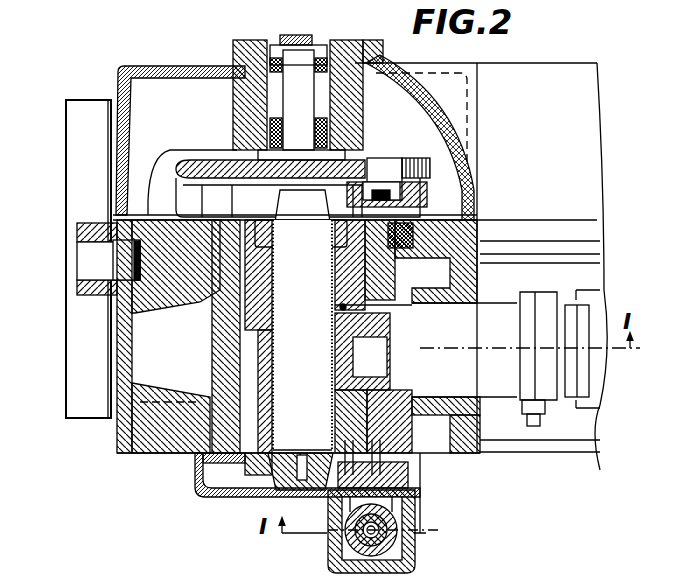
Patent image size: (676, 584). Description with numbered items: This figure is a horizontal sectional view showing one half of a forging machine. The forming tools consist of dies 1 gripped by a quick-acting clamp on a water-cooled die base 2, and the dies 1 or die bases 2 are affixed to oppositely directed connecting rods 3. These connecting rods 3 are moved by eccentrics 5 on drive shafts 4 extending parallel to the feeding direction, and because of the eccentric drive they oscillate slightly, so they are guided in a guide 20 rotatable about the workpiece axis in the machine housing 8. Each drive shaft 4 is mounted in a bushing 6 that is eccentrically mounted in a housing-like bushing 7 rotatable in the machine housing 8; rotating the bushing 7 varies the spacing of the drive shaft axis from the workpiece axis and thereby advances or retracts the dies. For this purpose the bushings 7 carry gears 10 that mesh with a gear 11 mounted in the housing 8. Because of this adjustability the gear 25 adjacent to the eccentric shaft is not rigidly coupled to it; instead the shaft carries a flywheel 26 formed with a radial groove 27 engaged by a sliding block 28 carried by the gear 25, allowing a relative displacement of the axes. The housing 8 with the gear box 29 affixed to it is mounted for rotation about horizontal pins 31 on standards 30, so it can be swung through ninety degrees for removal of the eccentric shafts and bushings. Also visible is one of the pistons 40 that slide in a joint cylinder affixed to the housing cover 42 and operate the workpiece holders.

The dies 1 is at (552, 337).
The die base 2 is at (543, 300).
The connecting rods 3 is at (497, 382).
The drive shafts 4 is at (402, 327).
The eccentrics 5 is at (300, 370).
The bushings 6 is at (257, 283).
The housing-like bushings 7 is at (213, 420).
The machine housing 8 is at (113, 313).
The gears 10 is at (218, 250).
The gear 11 is at (455, 248).
The guide 20 is at (470, 296).
The gears 25 is at (364, 158).
The flywheel 26 is at (417, 233).
The radial groove 27 is at (428, 197).
The sliding block 28 is at (420, 157).
The gear box 29 is at (170, 97).
The standards 30 is at (84, 161).
The horizontal pins 31 is at (90, 258).
The pistons 40 is at (397, 529).
The housing cover 42 is at (225, 493).